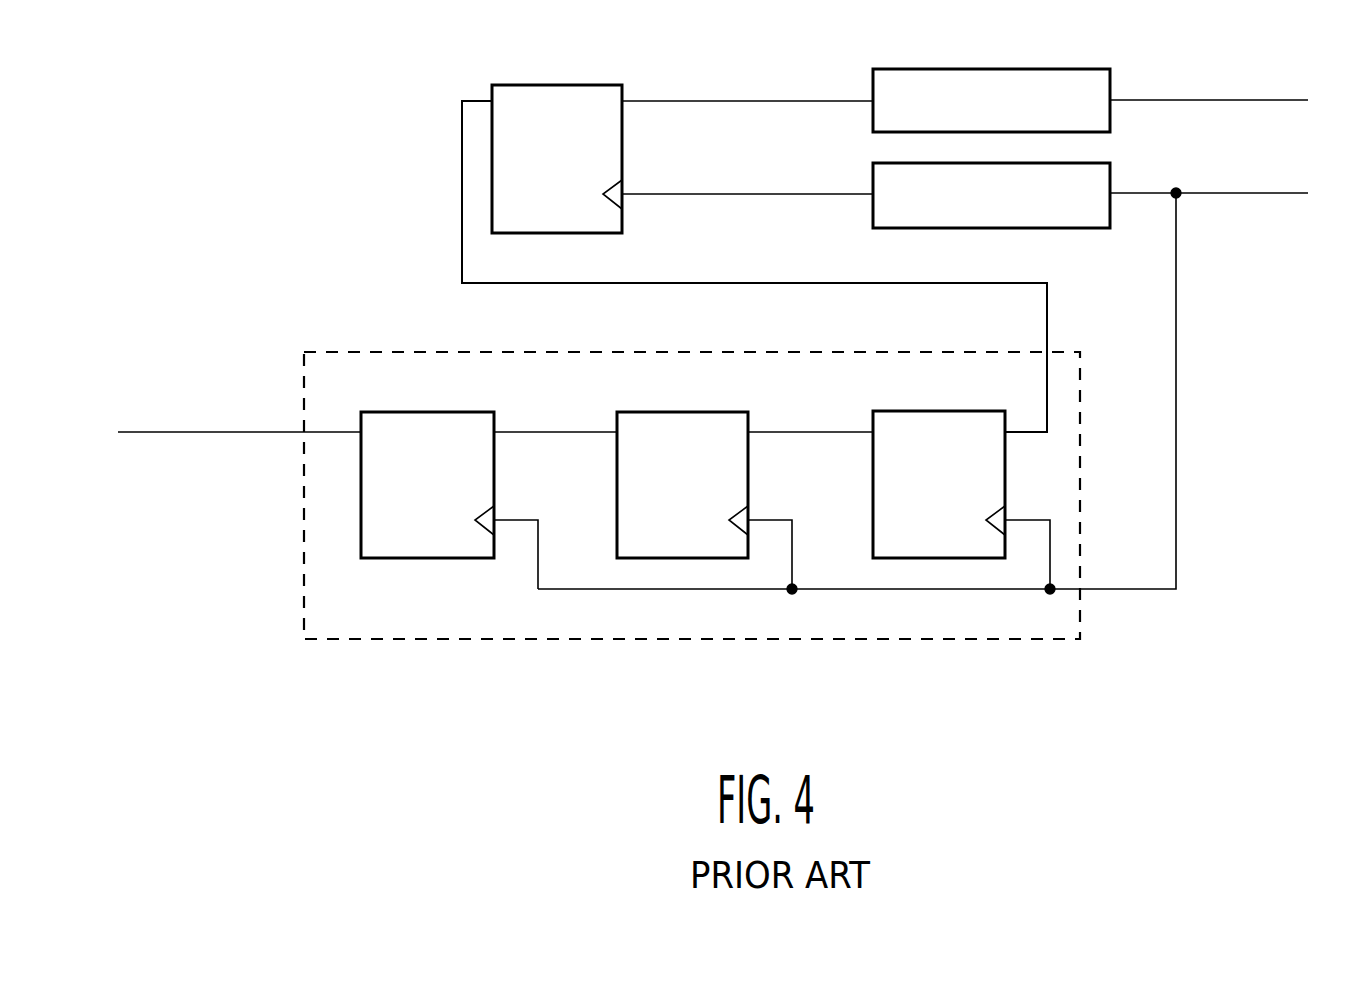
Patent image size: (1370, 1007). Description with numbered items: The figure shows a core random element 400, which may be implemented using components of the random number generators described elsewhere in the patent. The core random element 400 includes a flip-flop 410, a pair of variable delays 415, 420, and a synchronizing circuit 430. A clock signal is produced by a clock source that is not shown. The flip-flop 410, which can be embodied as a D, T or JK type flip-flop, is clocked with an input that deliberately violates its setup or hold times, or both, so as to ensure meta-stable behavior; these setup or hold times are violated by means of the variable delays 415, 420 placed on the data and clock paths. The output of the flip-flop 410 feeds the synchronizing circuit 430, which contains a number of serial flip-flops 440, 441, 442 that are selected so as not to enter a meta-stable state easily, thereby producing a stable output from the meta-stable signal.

The core random element 400 is at (166, 159).
The flip-flop 410 is at (523, 85).
The variable delay 415 is at (1013, 69).
The variable delay 420 is at (1035, 228).
The synchronizing circuit 430 is at (1003, 640).
The serial flip-flop 440 is at (900, 411).
The serial flip-flop 441 is at (637, 412).
The serial flip-flop 442 is at (380, 412).